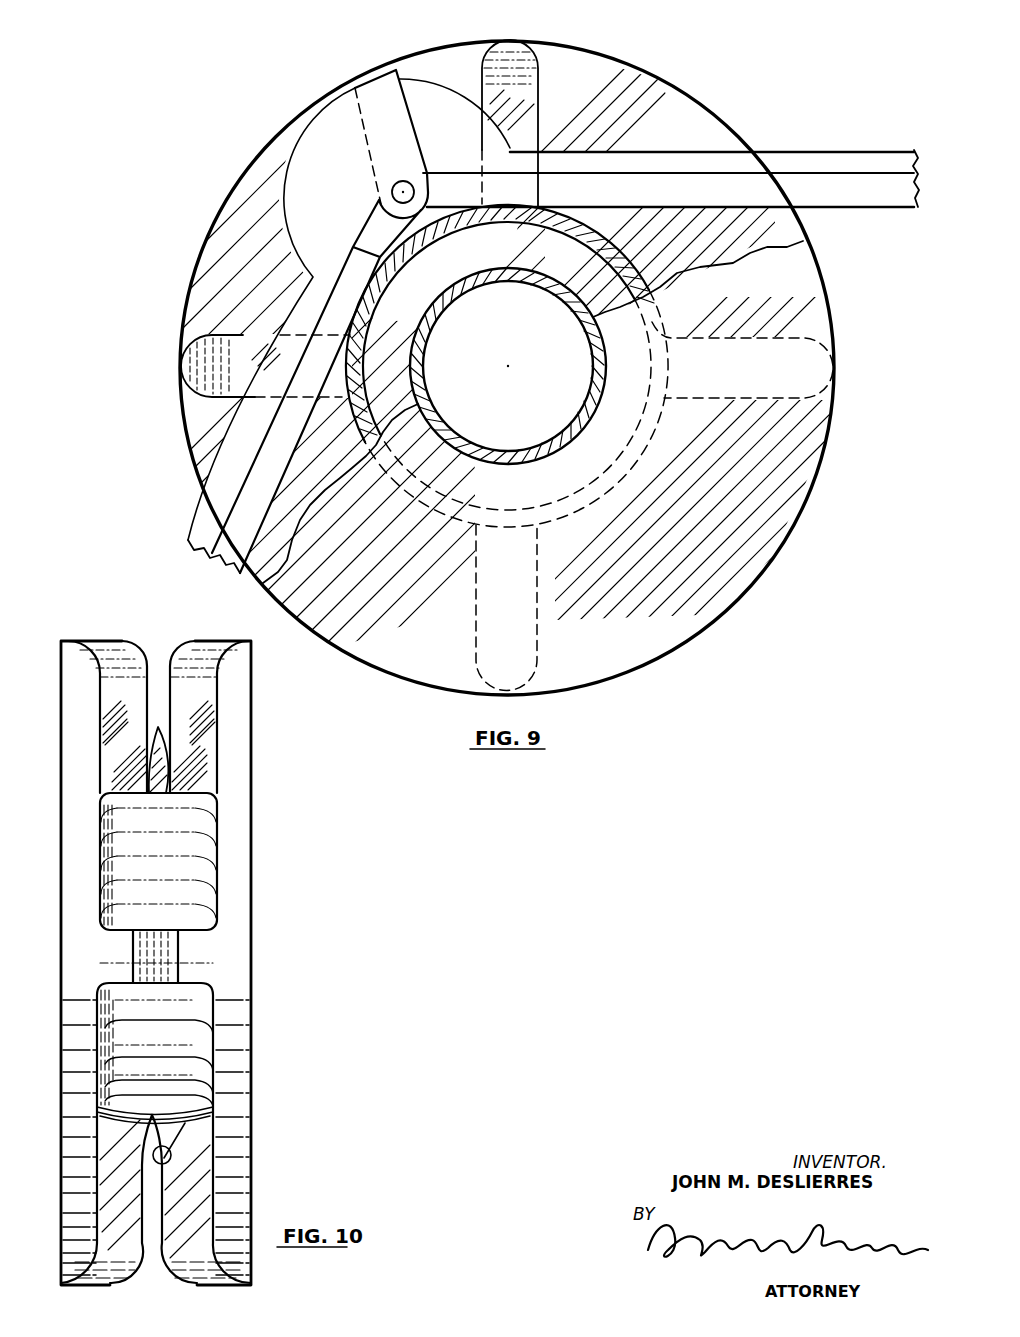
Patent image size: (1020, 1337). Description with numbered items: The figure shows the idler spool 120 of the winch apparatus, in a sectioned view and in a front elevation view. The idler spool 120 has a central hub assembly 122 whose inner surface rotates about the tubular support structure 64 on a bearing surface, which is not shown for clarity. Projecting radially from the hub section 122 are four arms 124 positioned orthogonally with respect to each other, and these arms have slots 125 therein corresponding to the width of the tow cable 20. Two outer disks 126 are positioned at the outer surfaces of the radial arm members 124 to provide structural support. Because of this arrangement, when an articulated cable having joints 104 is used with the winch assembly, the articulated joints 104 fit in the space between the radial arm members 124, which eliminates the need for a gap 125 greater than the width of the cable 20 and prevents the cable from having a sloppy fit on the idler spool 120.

In FIG. 9, the tow cable 20 is at (836, 186).
In FIG. 10, the tow cable 20 is at (163, 731).
In FIG. 9, the tubular support structure 64 is at (596, 407).
In FIG. 9, the joints 104 is at (337, 160).
In FIG. 9, the idler spool 120 is at (719, 548).
In FIG. 10, the idler spool 120 is at (228, 792).
In FIG. 9, the central hub assembly 122 is at (455, 490).
In FIG. 10, the central hub assembly 122 is at (187, 1083).
In FIG. 9, the arms 124 is at (504, 652).
In FIG. 10, the arms 124 is at (200, 1203).
In FIG. 10, the slots 125 is at (185, 1146).
In FIG. 9, the outer disks 126 is at (800, 447).
In FIG. 10, the outer disks 126 is at (223, 1037).